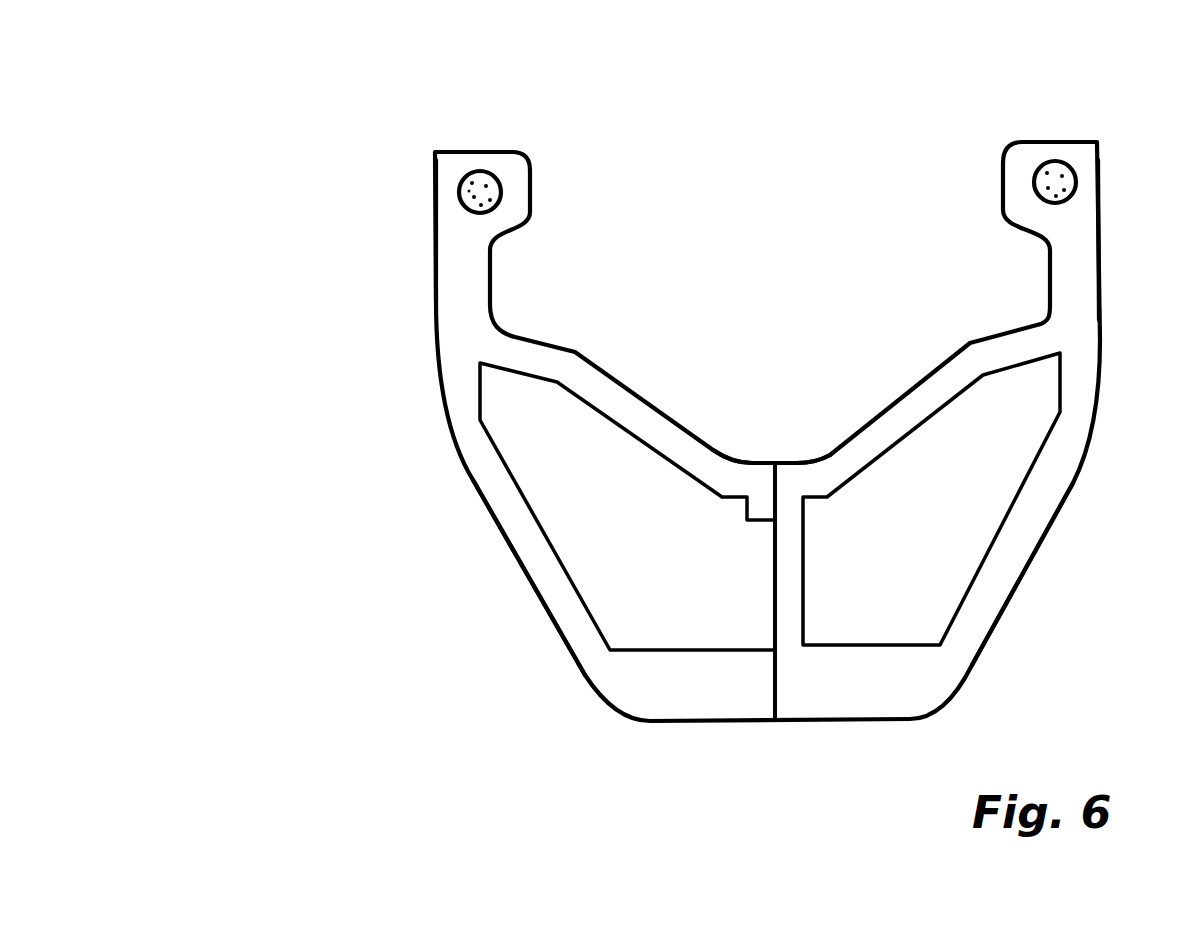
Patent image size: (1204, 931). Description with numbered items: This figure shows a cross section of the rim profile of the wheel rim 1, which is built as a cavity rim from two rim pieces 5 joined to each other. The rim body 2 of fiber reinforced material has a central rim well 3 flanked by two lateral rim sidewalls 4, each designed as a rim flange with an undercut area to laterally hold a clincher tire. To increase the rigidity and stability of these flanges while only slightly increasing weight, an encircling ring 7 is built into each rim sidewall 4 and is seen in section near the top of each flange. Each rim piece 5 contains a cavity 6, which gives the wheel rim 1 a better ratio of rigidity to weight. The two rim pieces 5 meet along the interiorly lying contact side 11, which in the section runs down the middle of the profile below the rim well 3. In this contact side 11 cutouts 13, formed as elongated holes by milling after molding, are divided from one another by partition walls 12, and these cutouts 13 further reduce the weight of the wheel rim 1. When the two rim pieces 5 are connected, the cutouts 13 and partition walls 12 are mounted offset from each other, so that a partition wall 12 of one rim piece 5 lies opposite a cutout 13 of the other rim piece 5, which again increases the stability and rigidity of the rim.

The wheel rim 1 is at (304, 183).
The rim body 2 is at (462, 530).
The rim well 3 is at (741, 447).
The rim sidewall 4 is at (453, 283).
The rim piece 5 is at (561, 622).
The cavity 6 is at (602, 511).
The encircling ring 7 is at (486, 190).
The contact side 11 is at (776, 553).
The partition wall 12 is at (790, 590).
The cutout 13 is at (765, 614).